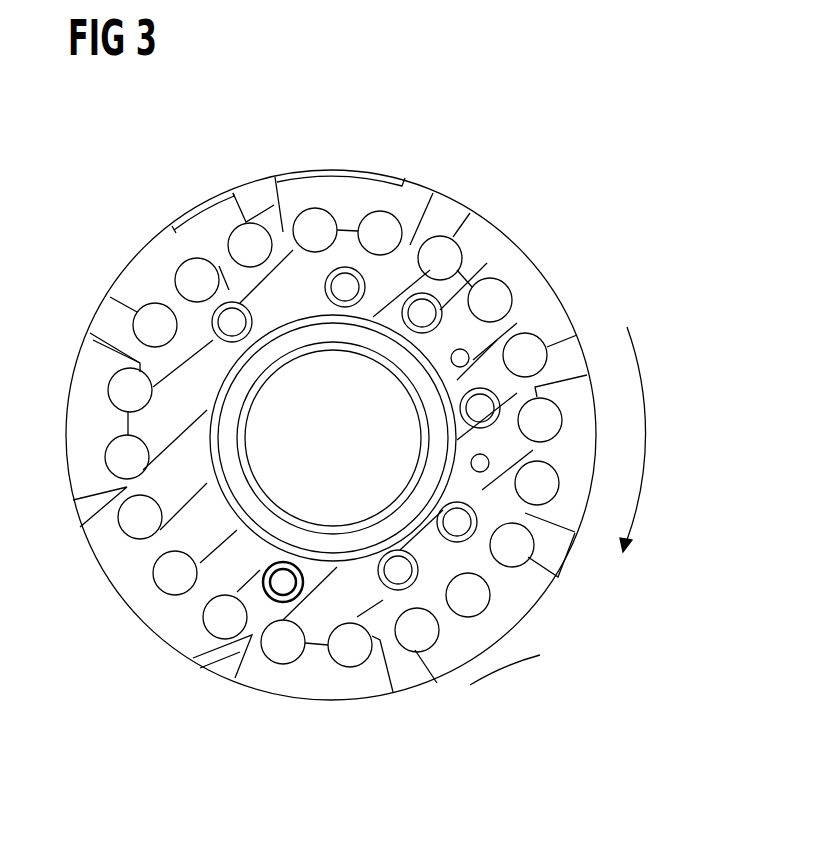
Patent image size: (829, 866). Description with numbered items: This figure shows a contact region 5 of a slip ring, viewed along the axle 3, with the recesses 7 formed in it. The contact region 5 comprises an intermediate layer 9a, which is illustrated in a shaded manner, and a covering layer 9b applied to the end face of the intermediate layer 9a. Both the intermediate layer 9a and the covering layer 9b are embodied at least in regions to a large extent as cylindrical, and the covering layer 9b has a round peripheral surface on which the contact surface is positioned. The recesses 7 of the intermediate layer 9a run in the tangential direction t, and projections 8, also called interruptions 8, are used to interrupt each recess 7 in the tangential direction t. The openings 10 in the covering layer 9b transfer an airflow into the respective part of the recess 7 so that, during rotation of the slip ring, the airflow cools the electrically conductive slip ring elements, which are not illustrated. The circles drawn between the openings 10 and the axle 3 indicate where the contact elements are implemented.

The axle 3 is at (285, 425).
The contact region 5 is at (145, 178).
The recess 7 is at (508, 255).
The projection 8 is at (447, 210).
The intermediate layer 9a is at (412, 678).
The covering layer 9b is at (510, 650).
The opening 10 is at (352, 653).
The tangential direction t is at (647, 437).